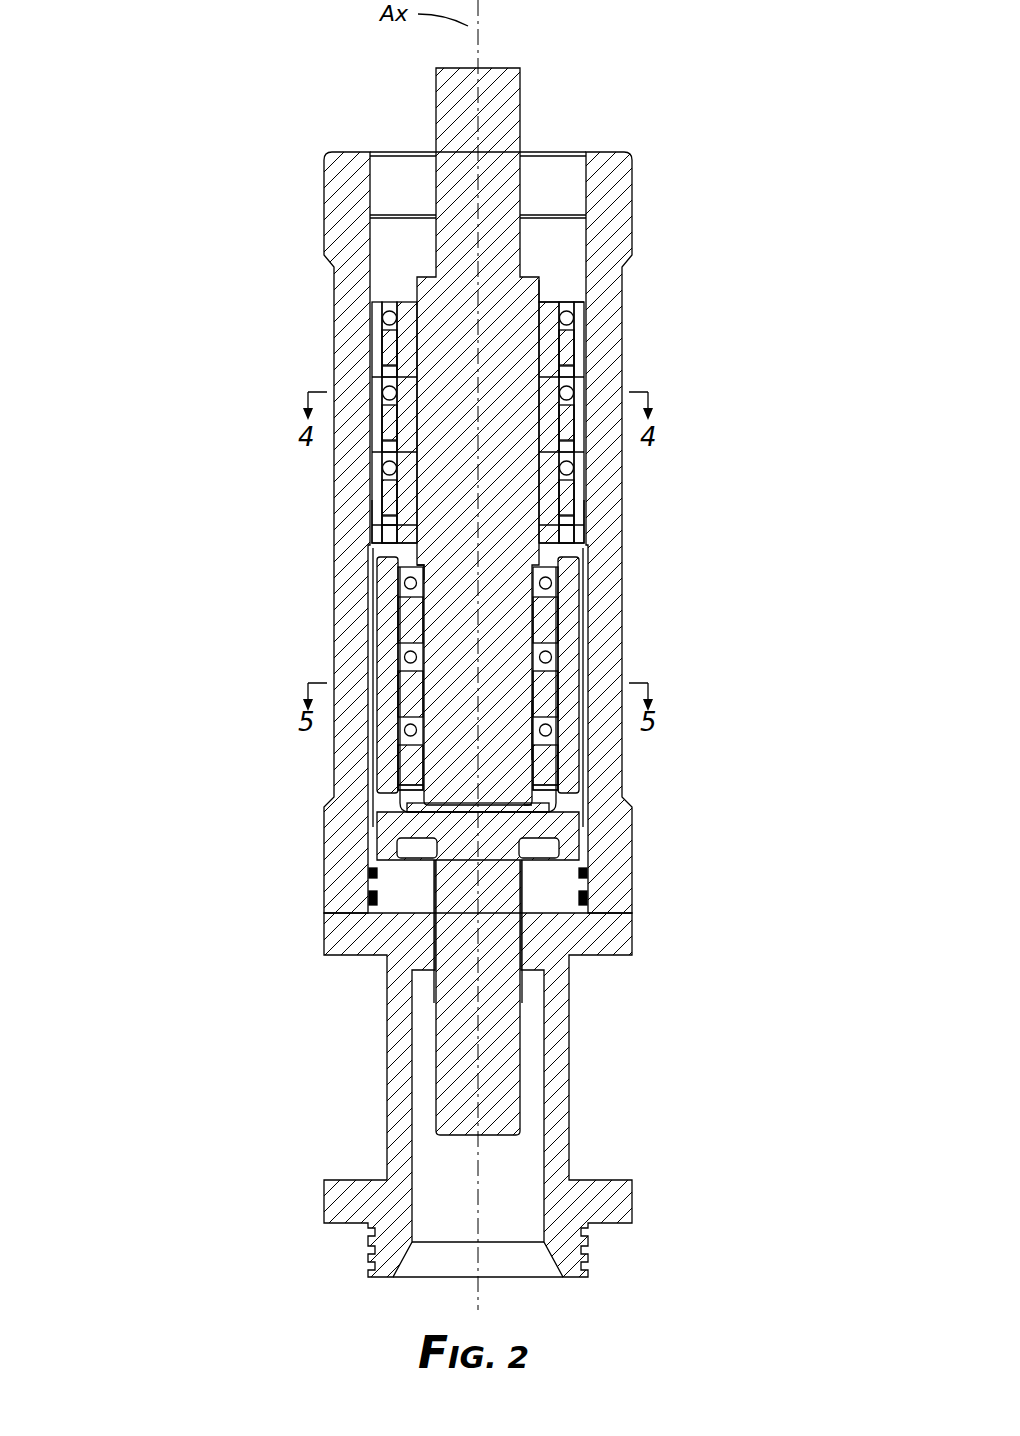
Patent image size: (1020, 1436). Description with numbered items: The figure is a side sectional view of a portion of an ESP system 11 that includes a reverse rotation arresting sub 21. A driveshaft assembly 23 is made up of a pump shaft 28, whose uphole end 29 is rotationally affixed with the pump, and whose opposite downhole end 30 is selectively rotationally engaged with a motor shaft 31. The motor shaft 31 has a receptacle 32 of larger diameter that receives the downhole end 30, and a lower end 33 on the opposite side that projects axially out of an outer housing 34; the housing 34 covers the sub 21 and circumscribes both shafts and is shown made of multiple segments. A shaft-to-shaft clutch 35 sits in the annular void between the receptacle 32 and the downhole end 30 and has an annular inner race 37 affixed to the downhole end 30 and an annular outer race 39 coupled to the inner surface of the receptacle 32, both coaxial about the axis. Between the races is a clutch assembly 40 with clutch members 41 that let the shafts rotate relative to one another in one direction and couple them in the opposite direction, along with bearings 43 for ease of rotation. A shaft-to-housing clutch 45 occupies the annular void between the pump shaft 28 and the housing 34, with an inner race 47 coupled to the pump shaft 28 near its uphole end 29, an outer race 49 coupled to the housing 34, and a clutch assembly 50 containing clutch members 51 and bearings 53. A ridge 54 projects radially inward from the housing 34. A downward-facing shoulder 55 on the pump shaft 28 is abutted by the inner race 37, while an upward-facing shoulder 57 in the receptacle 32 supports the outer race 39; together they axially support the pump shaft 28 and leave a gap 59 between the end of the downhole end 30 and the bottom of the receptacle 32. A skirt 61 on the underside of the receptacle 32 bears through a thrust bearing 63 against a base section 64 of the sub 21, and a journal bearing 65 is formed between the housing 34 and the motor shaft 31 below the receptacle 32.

The ESP system 11 is at (170, 108).
The sub 21 is at (755, 185).
The driveshaft assembly 23 is at (405, 110).
The pump shaft 28 is at (566, 108).
The uphole end 29 is at (512, 88).
The downhole end 30 is at (525, 725).
The motor shaft 31 is at (388, 742).
The receptacle 32 is at (375, 500).
The lower end 33 is at (515, 1063).
The outer housing 34 is at (333, 455).
The shaft-to-shaft clutch 35 is at (467, 685).
The inner race 37 is at (415, 777).
The outer race 39 is at (392, 596).
The clutch assembly 40 is at (540, 803).
The clutch members 41 is at (560, 608).
The bearings 43 is at (550, 658).
The shaft-to-housing clutch 45 is at (568, 282).
The inner race 47 is at (572, 285).
The outer race 49 is at (585, 318).
The clutch assembly 50 is at (473, 371).
The clutch members 51 is at (390, 347).
The bearings 53 is at (375, 318).
The ridge 54 is at (583, 527).
The downward-facing shoulder 55 is at (432, 562).
The upward-facing shoulder 57 is at (558, 790).
The gap 59 is at (490, 806).
The skirt 61 is at (578, 862).
The thrust bearing 63 is at (378, 858).
The base section 64 is at (345, 957).
The journal bearing 65 is at (530, 905).